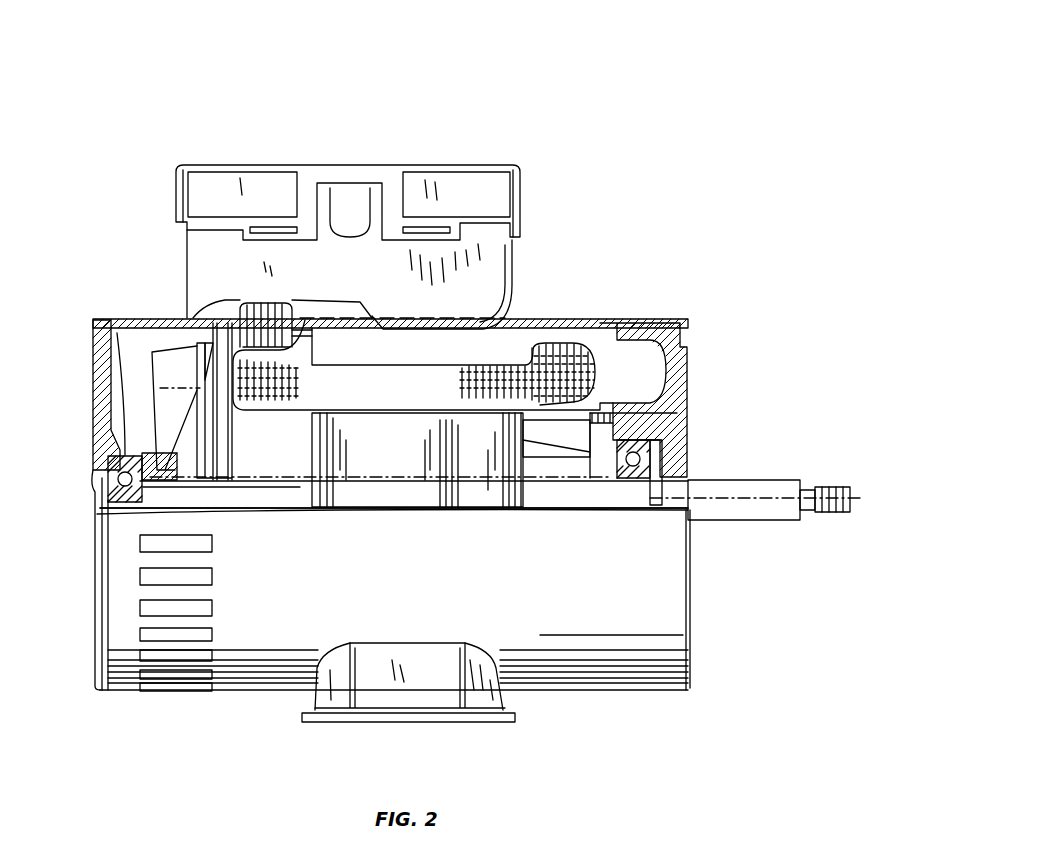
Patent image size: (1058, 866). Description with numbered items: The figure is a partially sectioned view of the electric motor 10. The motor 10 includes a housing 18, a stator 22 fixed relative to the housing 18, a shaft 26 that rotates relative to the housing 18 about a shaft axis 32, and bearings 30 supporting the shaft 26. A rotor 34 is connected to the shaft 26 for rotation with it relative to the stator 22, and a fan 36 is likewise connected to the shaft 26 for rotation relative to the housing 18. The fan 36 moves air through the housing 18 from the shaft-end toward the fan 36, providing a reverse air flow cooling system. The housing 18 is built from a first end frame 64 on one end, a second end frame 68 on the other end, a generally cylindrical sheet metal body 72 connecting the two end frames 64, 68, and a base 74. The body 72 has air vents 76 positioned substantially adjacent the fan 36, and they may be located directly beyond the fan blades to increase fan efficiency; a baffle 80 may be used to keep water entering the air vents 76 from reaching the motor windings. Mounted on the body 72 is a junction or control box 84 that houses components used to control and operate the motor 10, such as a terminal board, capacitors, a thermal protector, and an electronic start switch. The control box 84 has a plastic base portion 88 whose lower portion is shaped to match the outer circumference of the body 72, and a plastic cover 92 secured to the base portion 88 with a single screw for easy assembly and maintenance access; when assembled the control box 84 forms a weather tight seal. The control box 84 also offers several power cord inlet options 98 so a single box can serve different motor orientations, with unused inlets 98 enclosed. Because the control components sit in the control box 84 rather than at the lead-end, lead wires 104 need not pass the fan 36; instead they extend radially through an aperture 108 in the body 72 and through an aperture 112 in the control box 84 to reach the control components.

The motor 10 is at (688, 104).
The housing 18 is at (392, 646).
The stator 22 is at (592, 368).
The shaft 26 is at (480, 472).
The bearings 30 is at (135, 487).
The shaft axis 32 is at (770, 485).
The rotor 34 is at (322, 455).
The fan 36 is at (160, 355).
The first end frame 64 is at (672, 318).
The second end frame 68 is at (95, 340).
The body 72 is at (545, 312).
The base 74 is at (422, 690).
The air vents 76 is at (213, 545).
The baffle 80 is at (213, 340).
The control box 84 is at (386, 218).
The base portion 88 is at (497, 248).
The cover 92 is at (473, 175).
The power cord inlet options 98 is at (345, 200).
The lead wires 104 is at (281, 332).
The aperture 108 is at (270, 306).
The aperture 112 is at (247, 322).